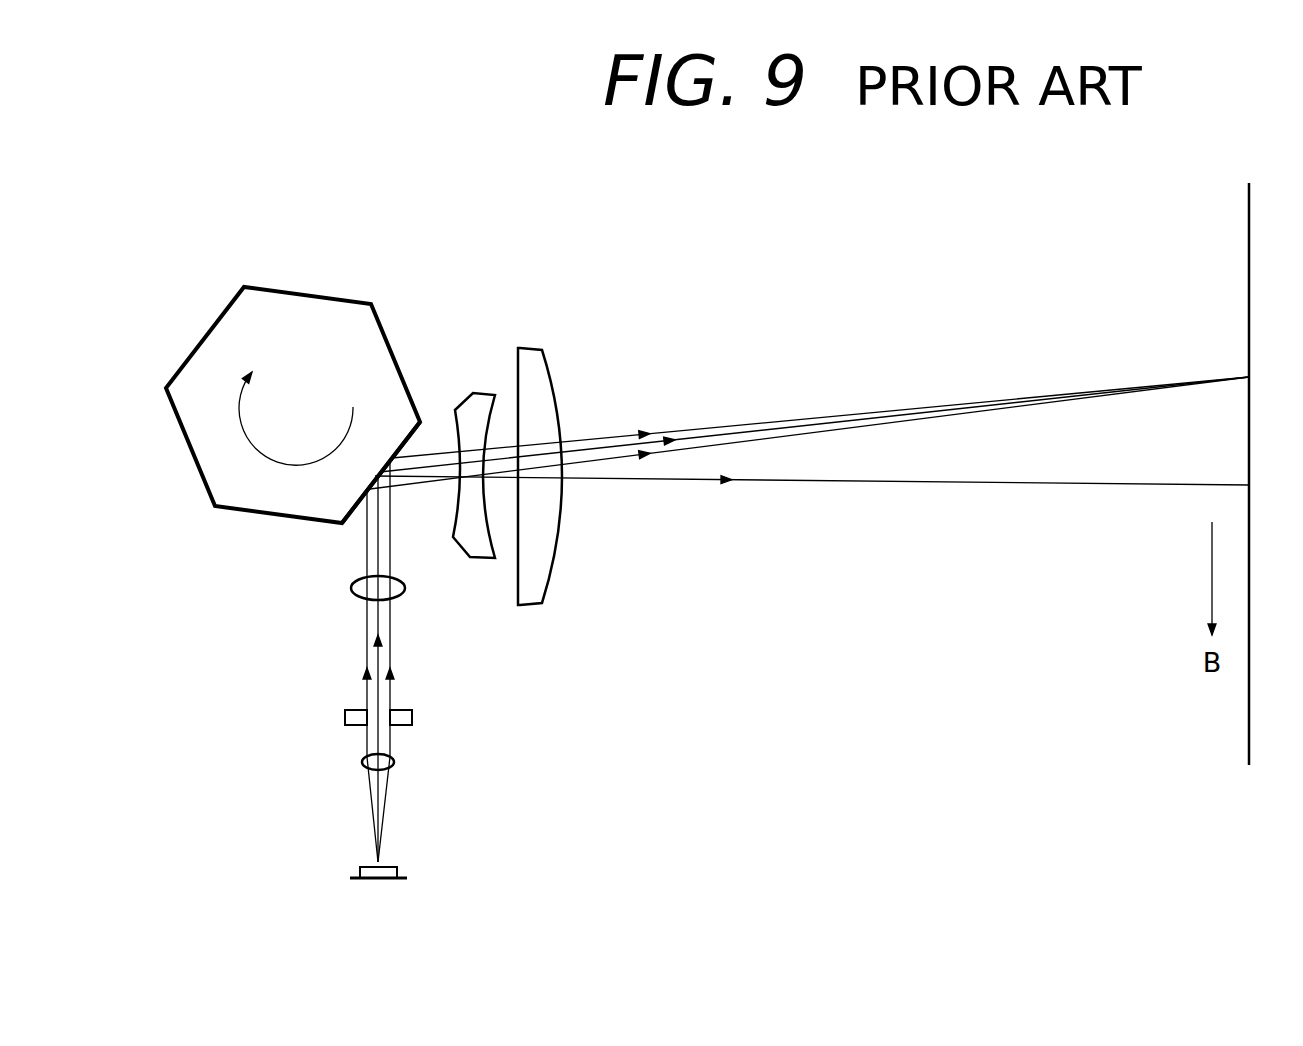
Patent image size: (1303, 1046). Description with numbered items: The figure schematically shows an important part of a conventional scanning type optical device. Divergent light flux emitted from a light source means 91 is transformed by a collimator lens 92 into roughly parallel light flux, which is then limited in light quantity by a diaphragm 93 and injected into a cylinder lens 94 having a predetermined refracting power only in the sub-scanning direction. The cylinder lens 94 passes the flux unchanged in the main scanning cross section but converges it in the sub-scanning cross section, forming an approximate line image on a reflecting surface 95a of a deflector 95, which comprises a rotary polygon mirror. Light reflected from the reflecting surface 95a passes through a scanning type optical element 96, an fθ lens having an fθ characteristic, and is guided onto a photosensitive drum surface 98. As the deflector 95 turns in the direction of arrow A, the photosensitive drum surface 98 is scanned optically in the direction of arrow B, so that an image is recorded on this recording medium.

The light source means 91 is at (398, 865).
The collimator lens 92 is at (394, 762).
The diaphragm 93 is at (413, 713).
The cylinder lens 94 is at (351, 587).
The deflector 95 is at (193, 475).
The reflecting surface 95a is at (421, 427).
The scanning type optical element 96 is at (552, 615).
The photosensitive drum surface 98 is at (1249, 278).